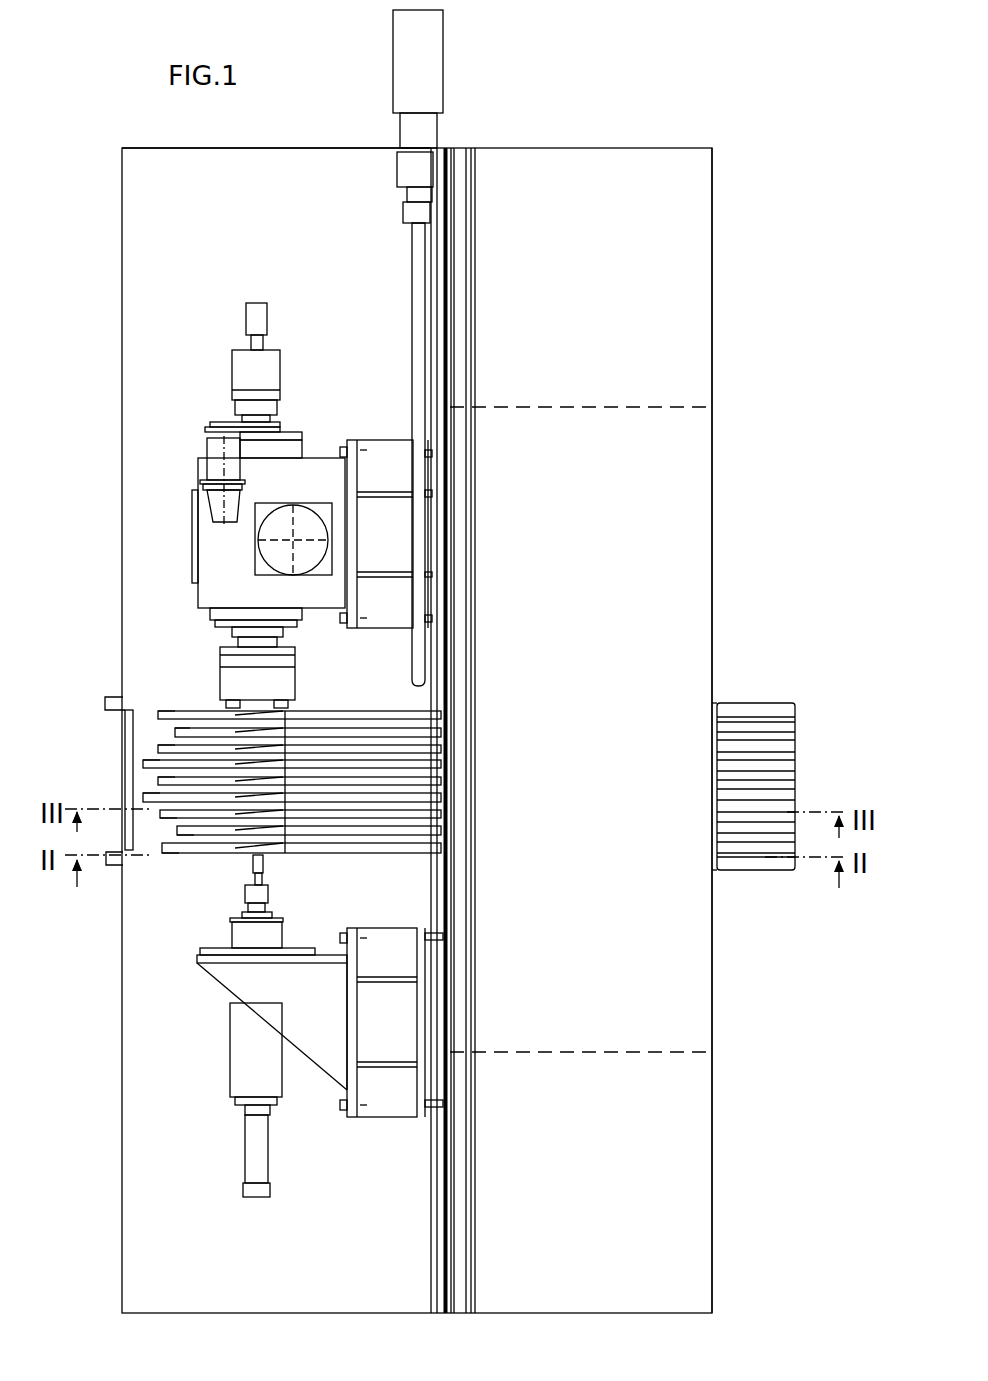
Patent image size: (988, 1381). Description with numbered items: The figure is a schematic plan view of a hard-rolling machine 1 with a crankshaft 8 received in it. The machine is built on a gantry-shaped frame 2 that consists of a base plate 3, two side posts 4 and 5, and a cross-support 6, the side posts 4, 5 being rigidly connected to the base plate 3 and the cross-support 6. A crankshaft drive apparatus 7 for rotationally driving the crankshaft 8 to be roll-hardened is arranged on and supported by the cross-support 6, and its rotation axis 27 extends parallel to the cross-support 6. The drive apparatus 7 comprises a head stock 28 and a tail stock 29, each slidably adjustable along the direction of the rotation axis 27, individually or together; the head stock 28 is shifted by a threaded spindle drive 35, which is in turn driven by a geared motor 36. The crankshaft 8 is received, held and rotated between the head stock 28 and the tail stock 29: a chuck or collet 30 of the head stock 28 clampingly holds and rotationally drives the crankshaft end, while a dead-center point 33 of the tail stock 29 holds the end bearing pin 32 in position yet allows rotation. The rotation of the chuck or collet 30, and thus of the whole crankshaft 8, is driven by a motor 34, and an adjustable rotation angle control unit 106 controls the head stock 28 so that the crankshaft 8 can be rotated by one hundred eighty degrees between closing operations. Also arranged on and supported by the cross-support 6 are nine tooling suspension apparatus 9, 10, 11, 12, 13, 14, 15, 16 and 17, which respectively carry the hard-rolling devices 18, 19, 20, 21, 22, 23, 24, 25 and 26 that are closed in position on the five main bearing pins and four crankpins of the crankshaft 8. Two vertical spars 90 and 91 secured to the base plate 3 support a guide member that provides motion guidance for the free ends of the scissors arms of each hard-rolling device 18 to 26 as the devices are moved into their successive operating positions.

The hard-rolling machine 1 is at (692, 143).
The gantry-shaped frame 2 is at (556, 143).
The base plate 3 is at (221, 163).
The side post 4 is at (690, 1186).
The side post 5 is at (697, 315).
The cross-support 6 is at (713, 560).
The crankshaft drive apparatus 7 is at (227, 370).
The crankshaft 8 is at (269, 865).
The tooling suspension apparatus 9 is at (441, 849).
The tooling suspension apparatus 10 is at (441, 831).
The tooling suspension apparatus 11 is at (441, 815).
The tooling suspension apparatus 12 is at (441, 798).
The tooling suspension apparatus 13 is at (441, 781).
The tooling suspension apparatus 14 is at (441, 765).
The tooling suspension apparatus 15 is at (441, 749).
The tooling suspension apparatus 16 is at (441, 733).
The tooling suspension apparatus 17 is at (441, 716).
The hard-rolling device 18 is at (166, 853).
The hard-rolling device 19 is at (177, 832).
The hard-rolling device 20 is at (160, 816).
The hard-rolling device 21 is at (143, 799).
The hard-rolling device 22 is at (158, 781).
The hard-rolling device 23 is at (143, 764).
The hard-rolling device 24 is at (124, 710).
The hard-rolling device 25 is at (158, 748).
The hard-rolling device 26 is at (176, 732).
The rotation axis 27 is at (262, 642).
The head stock 28 is at (320, 456).
The tail stock 29 is at (307, 1068).
The chuck or collet 30 is at (290, 688).
The end bearing pin 32 is at (254, 862).
The dead-center point 33 is at (264, 883).
The motor 34 is at (208, 447).
The threaded spindle drive 35 is at (413, 254).
The geared motor 36 is at (397, 75).
The vertical spar 90 is at (107, 853).
The vertical spar 91 is at (105, 710).
The adjustable rotation angle control unit 106 is at (264, 300).